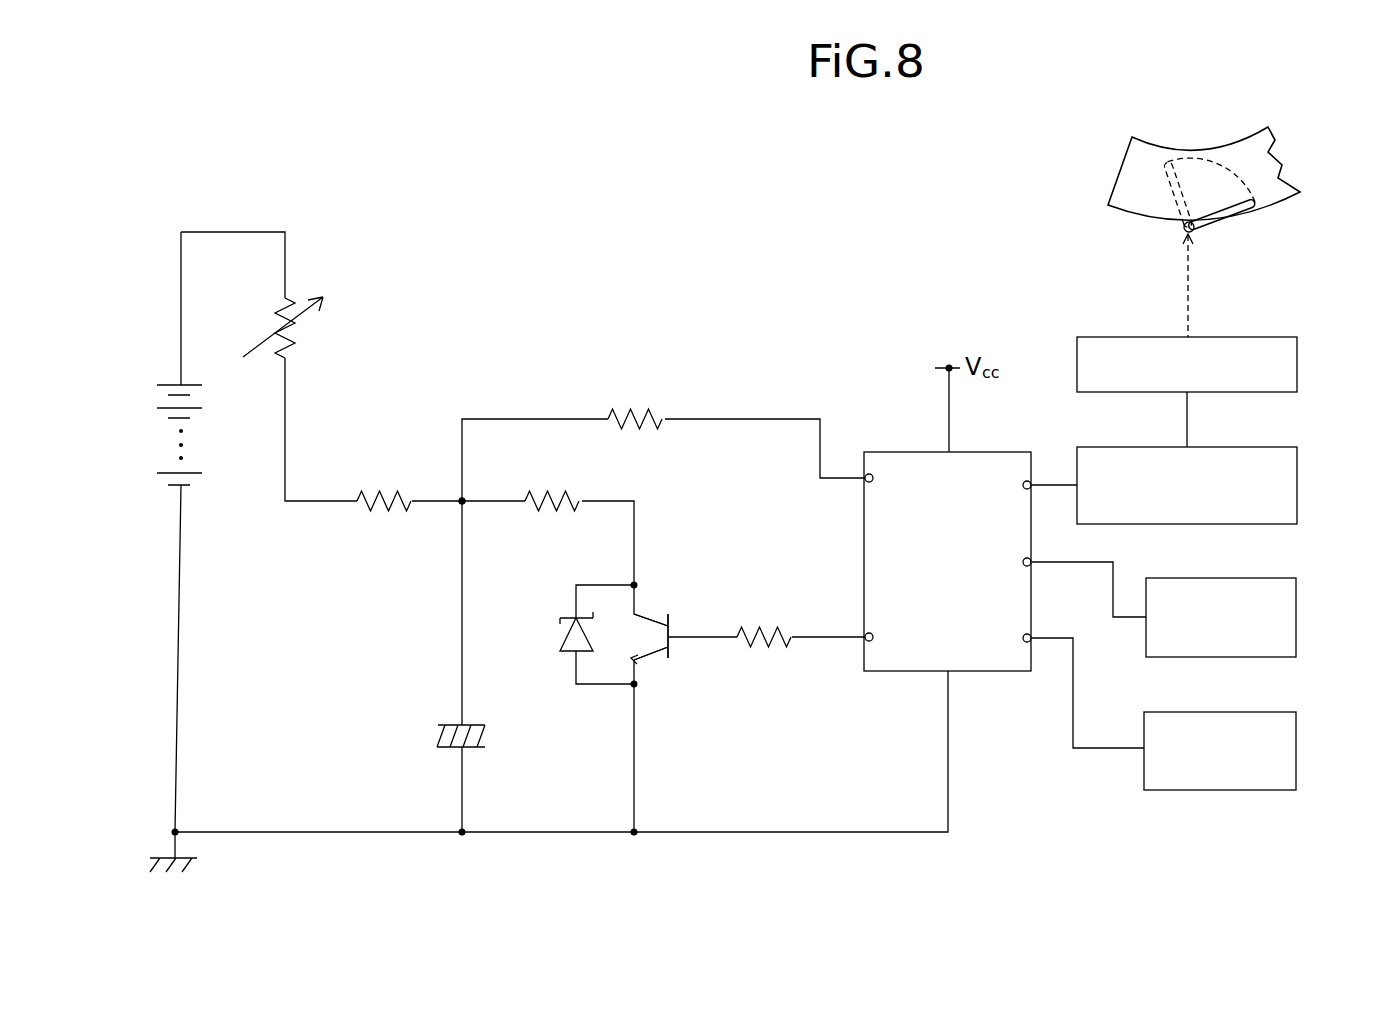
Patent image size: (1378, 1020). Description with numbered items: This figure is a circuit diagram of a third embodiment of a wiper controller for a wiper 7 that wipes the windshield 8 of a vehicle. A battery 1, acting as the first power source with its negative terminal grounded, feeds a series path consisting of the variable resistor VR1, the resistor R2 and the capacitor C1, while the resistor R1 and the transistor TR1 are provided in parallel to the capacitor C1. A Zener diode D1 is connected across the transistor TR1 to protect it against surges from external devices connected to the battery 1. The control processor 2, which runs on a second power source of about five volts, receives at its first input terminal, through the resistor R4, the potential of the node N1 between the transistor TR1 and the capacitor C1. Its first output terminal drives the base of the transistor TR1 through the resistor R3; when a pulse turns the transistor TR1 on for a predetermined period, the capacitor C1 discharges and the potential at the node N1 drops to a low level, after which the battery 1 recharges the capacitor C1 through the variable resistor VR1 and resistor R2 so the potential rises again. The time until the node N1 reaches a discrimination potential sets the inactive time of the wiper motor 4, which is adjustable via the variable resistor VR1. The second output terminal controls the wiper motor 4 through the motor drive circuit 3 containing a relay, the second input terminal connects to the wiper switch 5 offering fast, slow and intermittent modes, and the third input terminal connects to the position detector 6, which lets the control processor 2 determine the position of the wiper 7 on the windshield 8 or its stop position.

The battery 1 is at (168, 383).
The control processor 2 is at (883, 450).
The motor drive circuit 3 is at (1297, 485).
The wiper motor 4 is at (1297, 357).
The wiper switch 5 is at (1296, 612).
The position detector 6 is at (1296, 752).
The wiper 7 is at (1245, 208).
The windshield 8 is at (1130, 165).
The variable resistor VR1 is at (297, 336).
The resistor R1 is at (532, 496).
The resistor R2 is at (387, 490).
The resistor R3 is at (775, 650).
The resistor R4 is at (622, 410).
The capacitor C1 is at (450, 723).
The Zener diode D1 is at (563, 635).
The transistor TR1 is at (650, 620).
The node N1 is at (460, 505).